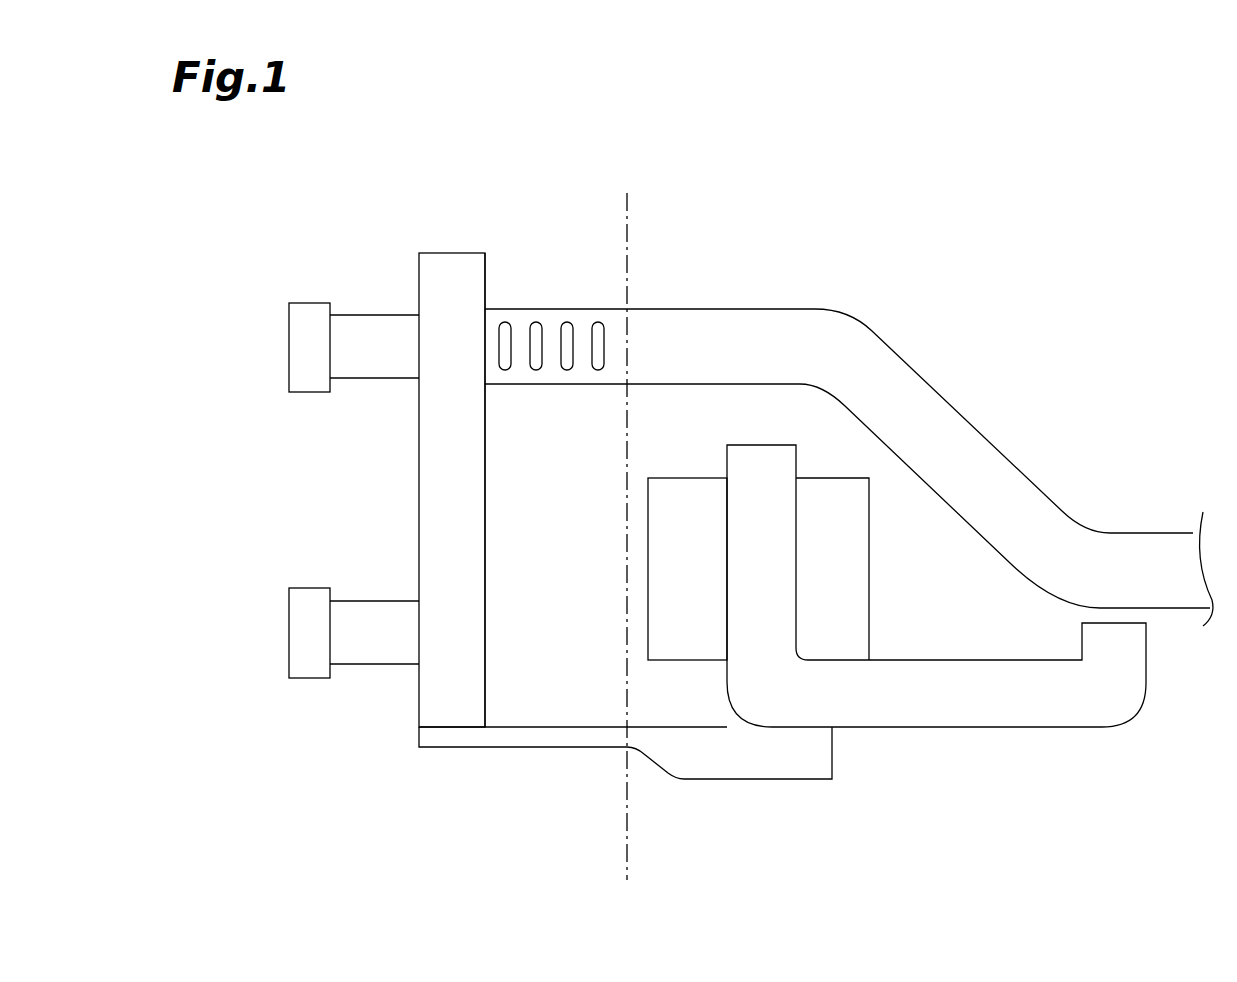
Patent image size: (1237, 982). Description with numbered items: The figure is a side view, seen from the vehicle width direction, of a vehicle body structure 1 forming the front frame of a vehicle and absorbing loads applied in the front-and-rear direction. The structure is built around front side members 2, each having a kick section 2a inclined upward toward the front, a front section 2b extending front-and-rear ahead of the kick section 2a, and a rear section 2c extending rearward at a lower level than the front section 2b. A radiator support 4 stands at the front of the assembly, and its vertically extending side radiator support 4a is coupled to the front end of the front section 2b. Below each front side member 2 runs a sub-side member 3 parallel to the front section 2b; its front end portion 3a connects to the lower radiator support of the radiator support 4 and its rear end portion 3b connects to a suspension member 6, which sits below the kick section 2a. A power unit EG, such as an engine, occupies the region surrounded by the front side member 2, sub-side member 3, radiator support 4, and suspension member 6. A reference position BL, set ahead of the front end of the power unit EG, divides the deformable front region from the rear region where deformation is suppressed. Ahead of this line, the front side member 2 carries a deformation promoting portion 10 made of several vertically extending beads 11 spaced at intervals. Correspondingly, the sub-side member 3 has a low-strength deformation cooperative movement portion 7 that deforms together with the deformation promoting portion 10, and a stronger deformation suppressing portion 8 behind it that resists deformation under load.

The vehicle body structure 1 is at (338, 232).
The front side member 2 is at (1012, 300).
The kick section 2a is at (975, 400).
The front section 2b is at (860, 298).
The rear section 2c is at (1088, 519).
The sub-side member 3 is at (575, 717).
The front end portion 3a is at (425, 735).
The rear end portion 3b is at (823, 757).
The radiator support 4 is at (417, 505).
The side radiator support 4a is at (465, 526).
The suspension member 6 is at (1022, 752).
The deformation cooperative movement portion 7 is at (627, 786).
The deformation suppressing portion 8 is at (832, 786).
The deformation promoting portion 10 is at (488, 427).
The bead 11 is at (505, 366).
The reference position BL is at (627, 220).
The power unit EG is at (695, 478).